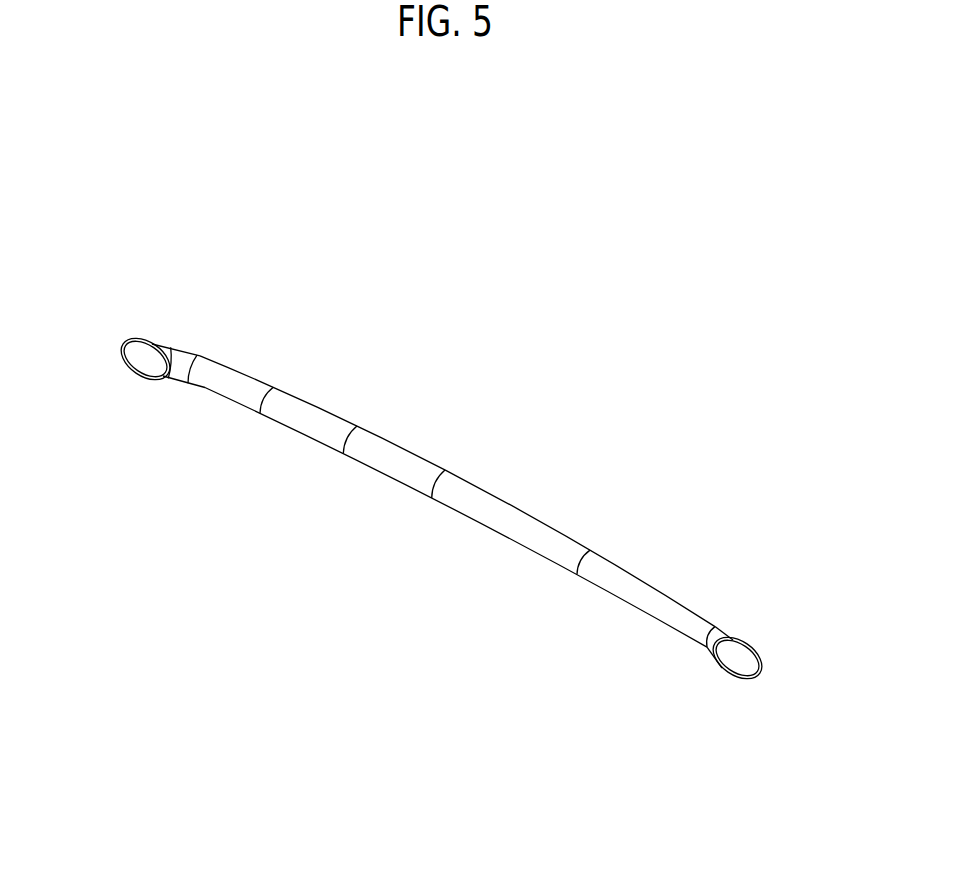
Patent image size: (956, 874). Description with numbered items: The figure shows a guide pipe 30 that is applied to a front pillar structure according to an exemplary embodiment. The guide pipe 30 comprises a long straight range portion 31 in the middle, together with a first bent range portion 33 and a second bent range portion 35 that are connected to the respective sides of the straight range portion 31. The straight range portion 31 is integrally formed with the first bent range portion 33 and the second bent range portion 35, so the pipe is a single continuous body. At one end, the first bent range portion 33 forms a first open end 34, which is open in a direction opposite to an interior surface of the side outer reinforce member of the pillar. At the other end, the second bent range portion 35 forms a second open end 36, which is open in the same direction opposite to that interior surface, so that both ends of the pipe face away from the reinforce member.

The guide pipe 30 is at (459, 253).
The straight range portion 31 is at (437, 462).
The first bent range portion 33 is at (162, 342).
The first open end 34 is at (142, 360).
The second bent range portion 35 is at (735, 625).
The second open end 36 is at (740, 663).